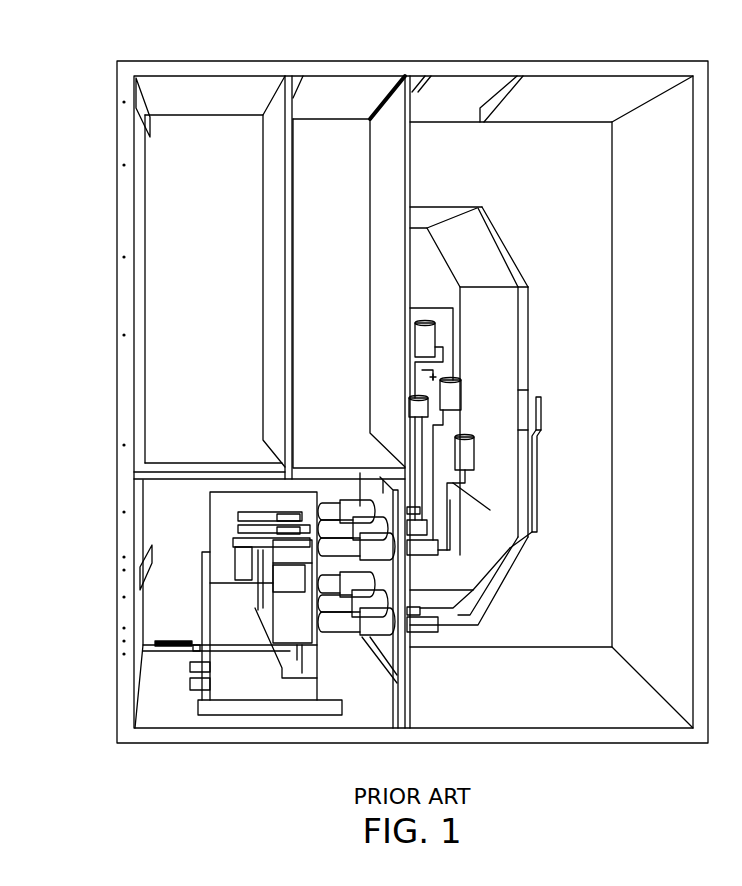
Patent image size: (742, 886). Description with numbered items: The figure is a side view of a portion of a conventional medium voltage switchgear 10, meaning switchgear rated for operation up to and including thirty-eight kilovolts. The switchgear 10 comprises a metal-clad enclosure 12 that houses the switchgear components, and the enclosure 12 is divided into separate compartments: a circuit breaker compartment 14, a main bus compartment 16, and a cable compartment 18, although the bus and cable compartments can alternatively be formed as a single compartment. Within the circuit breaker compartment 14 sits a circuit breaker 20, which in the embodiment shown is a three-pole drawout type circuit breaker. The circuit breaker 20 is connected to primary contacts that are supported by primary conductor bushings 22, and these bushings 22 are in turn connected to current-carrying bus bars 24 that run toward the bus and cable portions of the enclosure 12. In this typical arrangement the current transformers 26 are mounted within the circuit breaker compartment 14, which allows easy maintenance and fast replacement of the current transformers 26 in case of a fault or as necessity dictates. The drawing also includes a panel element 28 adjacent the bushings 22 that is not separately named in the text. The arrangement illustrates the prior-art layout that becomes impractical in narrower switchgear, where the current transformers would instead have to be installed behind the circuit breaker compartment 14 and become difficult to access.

The medium voltage switchgear 10 is at (62, 75).
The metal-clad enclosure 12 is at (225, 61).
The circuit breaker compartment 14 is at (158, 540).
The main bus compartment 16 is at (418, 236).
The cable compartment 18 is at (597, 132).
The circuit breaker 20 is at (250, 680).
The primary conductor bushings 22 is at (344, 545).
The bus bars 24 is at (541, 478).
The current transformers 26 is at (387, 552).
The insulating panel 28 is at (373, 493).